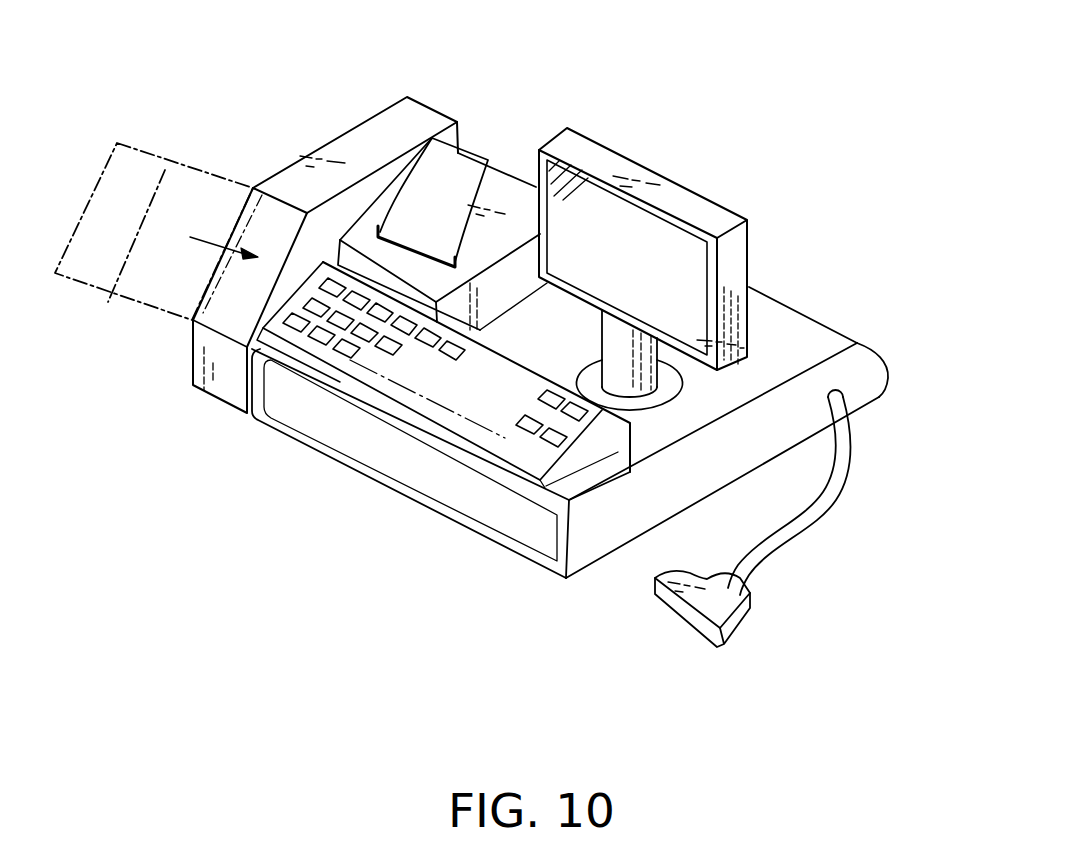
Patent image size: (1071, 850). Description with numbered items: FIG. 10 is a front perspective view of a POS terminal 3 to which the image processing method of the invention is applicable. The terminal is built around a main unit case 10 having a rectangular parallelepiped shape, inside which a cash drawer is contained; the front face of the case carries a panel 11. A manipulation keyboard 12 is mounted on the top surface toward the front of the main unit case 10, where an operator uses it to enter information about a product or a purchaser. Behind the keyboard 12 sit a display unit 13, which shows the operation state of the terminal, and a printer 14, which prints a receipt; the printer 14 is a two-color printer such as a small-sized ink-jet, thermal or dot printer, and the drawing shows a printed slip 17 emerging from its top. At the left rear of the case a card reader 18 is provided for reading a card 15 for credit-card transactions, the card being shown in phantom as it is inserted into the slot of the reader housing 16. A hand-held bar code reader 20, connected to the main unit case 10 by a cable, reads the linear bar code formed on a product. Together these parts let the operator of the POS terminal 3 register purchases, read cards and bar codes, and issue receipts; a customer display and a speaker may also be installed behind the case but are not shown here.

The POS terminal 3 is at (758, 134).
The main unit case 10 is at (863, 373).
The front panel 11 is at (330, 428).
The manipulation keyboard 12 is at (483, 413).
The display unit 13 is at (630, 167).
The printer 14 is at (367, 230).
The card 15 is at (140, 285).
The card reader 16 is at (320, 160).
The receipt slip 17 is at (467, 170).
The card reader 18 is at (582, 443).
The bar code reader 20 is at (743, 595).